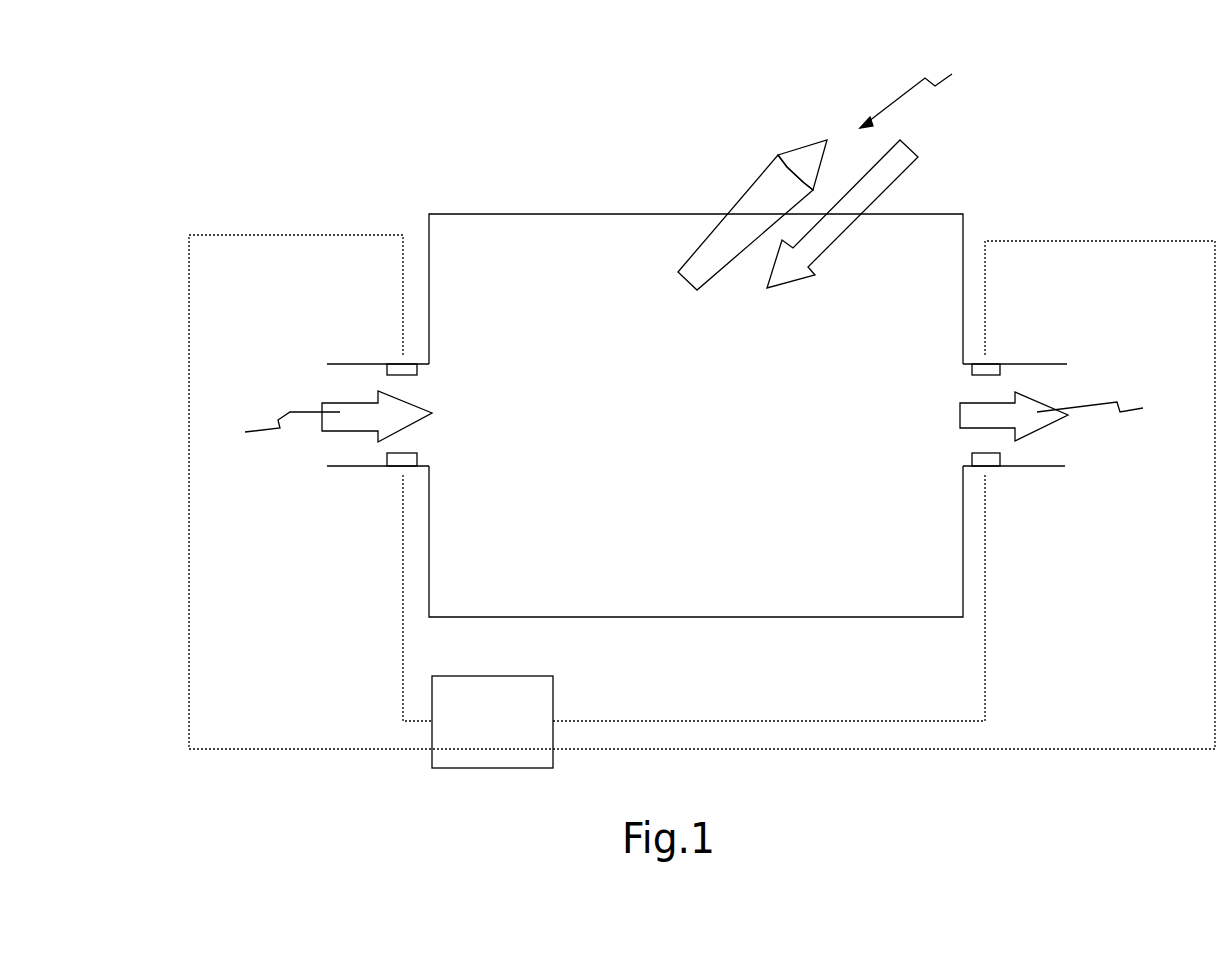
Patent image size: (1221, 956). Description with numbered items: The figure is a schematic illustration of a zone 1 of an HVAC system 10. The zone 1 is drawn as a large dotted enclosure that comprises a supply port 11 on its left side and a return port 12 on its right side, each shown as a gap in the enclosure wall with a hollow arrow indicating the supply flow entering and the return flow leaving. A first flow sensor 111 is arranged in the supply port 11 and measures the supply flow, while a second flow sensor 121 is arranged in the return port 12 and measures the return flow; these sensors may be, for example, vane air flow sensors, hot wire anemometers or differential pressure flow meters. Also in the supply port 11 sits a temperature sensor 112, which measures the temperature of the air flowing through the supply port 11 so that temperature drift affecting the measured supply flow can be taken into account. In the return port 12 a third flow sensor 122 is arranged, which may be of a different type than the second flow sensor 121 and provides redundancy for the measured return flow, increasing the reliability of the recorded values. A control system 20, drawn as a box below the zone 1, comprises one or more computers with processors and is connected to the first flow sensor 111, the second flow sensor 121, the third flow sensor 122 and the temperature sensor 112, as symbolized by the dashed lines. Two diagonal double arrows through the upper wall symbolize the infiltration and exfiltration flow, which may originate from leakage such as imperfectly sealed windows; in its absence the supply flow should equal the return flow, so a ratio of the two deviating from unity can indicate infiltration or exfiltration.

The HVAC system 10 is at (702, 403).
The zone 1 is at (525, 235).
The supply port 11 is at (702, 492).
The first flow sensor 111 is at (393, 471).
The temperature sensor 112 is at (400, 365).
The return port 12 is at (1053, 432).
The second flow sensor 121 is at (988, 462).
The third flow sensor 122 is at (995, 367).
The control system 20 is at (512, 735).